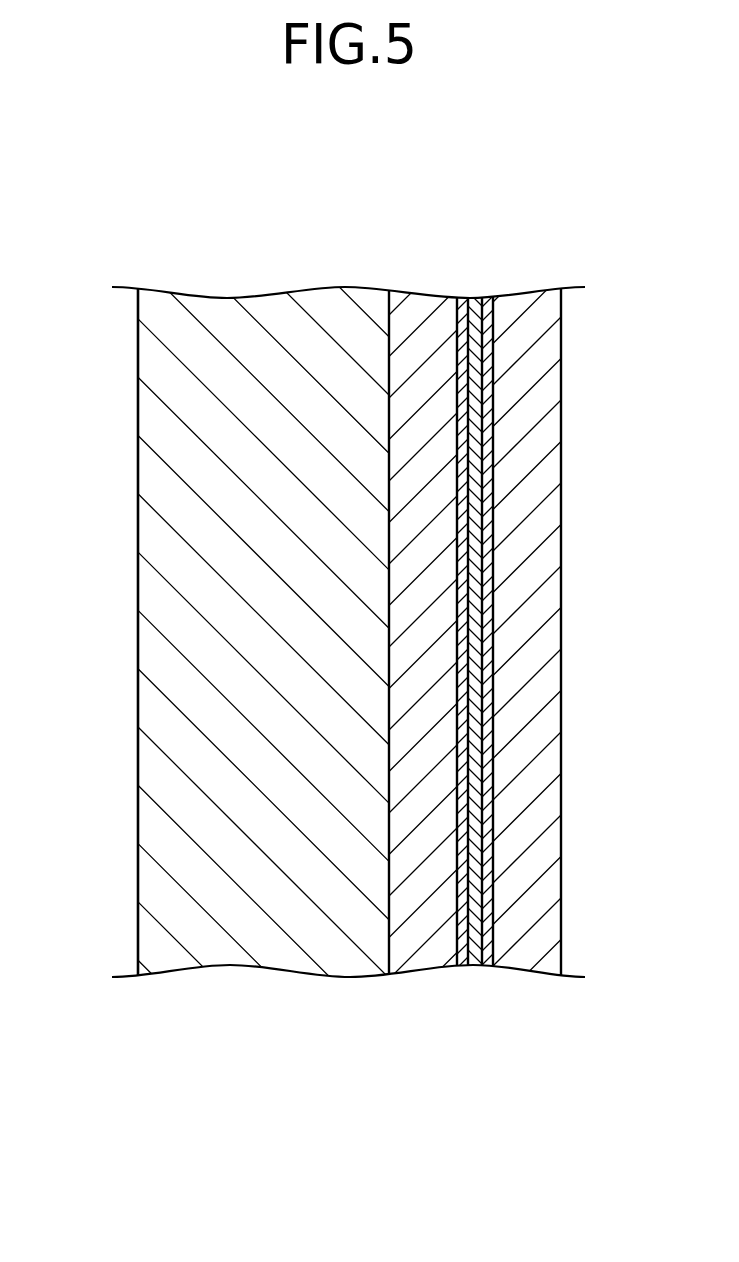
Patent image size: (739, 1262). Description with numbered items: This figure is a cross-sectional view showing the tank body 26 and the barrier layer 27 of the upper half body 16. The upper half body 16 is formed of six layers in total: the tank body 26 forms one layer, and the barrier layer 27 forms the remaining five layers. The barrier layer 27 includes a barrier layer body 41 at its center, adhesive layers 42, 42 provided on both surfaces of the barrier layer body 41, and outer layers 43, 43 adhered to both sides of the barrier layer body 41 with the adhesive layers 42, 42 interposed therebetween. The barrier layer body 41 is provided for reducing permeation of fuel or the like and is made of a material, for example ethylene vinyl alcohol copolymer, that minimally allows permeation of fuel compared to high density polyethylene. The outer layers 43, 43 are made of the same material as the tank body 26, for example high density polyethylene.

The upper half body 16 is at (137, 393).
The tank body 26 is at (270, 955).
The barrier layer 27 is at (353, 1057).
The barrier layer body 41 is at (475, 961).
The adhesive layer 42 is at (462, 961).
The outer layer 43 is at (423, 961).